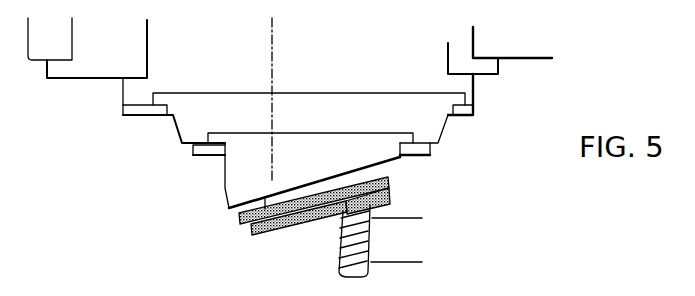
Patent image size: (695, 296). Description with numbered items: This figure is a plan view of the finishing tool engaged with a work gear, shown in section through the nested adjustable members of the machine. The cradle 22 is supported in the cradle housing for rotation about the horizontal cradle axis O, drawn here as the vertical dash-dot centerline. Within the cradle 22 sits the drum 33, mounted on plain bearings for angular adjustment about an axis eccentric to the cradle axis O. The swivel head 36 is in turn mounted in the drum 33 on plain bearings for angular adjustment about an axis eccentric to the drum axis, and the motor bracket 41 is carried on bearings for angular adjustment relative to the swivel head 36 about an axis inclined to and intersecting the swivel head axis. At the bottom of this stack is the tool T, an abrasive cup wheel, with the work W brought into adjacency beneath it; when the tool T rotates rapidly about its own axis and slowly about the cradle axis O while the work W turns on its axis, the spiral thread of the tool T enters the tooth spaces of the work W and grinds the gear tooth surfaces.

The cradle 22 is at (487, 66).
The drum 33 is at (457, 84).
The swivel head 36 is at (440, 126).
The motor bracket 41 is at (243, 166).
The cradle axis O is at (273, 82).
The tool T is at (390, 180).
The work W is at (340, 242).